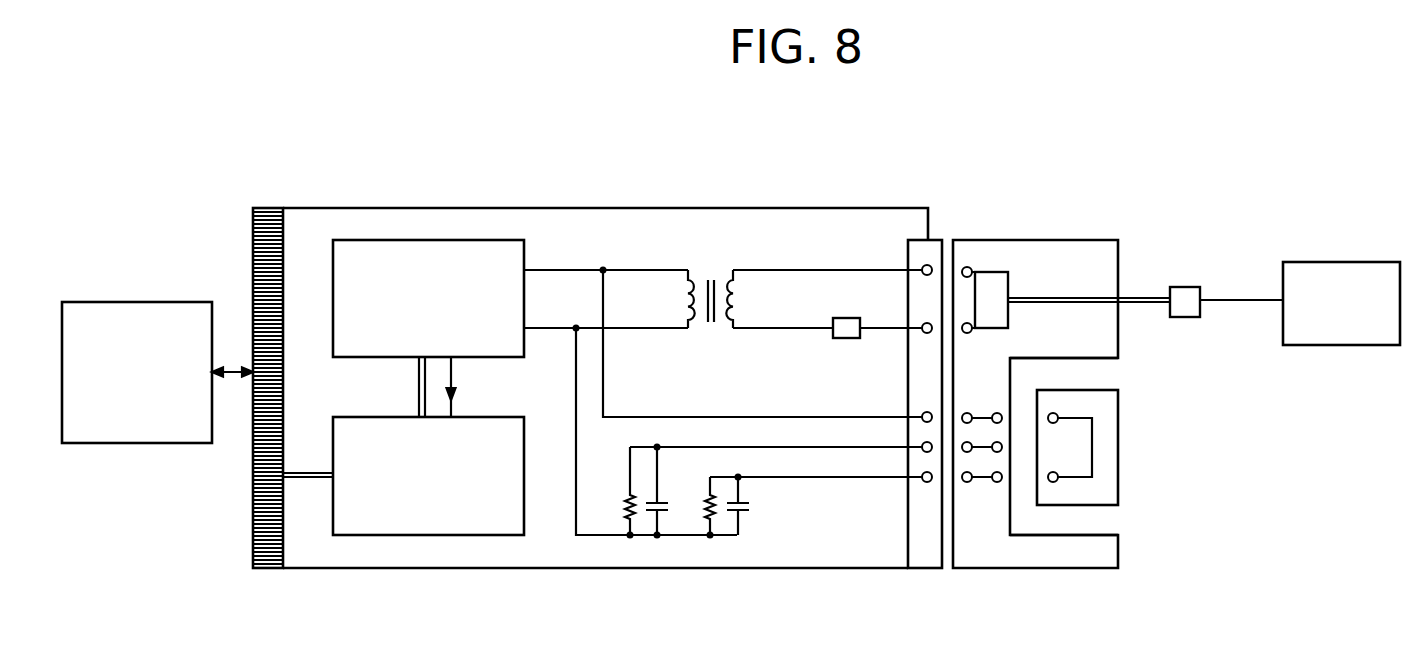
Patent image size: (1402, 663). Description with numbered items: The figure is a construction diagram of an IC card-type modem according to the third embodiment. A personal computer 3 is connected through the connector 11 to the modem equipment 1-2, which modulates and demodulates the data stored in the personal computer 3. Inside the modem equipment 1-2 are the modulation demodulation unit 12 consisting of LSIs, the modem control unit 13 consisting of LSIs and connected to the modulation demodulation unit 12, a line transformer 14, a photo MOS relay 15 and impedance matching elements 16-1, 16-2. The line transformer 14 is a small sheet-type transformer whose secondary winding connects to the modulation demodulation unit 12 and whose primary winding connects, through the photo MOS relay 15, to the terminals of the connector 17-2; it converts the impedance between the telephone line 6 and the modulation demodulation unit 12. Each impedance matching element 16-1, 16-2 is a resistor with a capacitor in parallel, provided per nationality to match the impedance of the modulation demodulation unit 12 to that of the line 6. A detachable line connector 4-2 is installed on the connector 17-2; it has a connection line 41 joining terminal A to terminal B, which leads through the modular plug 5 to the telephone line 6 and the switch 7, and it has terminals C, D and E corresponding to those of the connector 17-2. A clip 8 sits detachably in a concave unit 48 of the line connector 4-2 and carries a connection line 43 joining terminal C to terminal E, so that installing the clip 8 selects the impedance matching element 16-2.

The personal computer 3 is at (135, 302).
The modem equipment 1-2 is at (392, 208).
The connector 11 is at (252, 240).
The modulation demodulation unit 12 is at (333, 315).
The modem control unit 13 is at (333, 430).
The line transformer 14 is at (708, 280).
The photo MOS relay 15 is at (846, 339).
The impedance matching element 16-1 is at (641, 525).
The impedance matching element 16-2 is at (723, 525).
The connector 17-2 is at (937, 240).
The line connector 4-2 is at (974, 240).
The connection line 41 is at (1010, 287).
The modular plug 5 is at (1183, 285).
The telephone line 6 is at (1228, 303).
The switch 7 is at (1330, 262).
The clip 8 is at (1118, 490).
The connection line 43 is at (1092, 447).
The concave unit 48 is at (1100, 520).